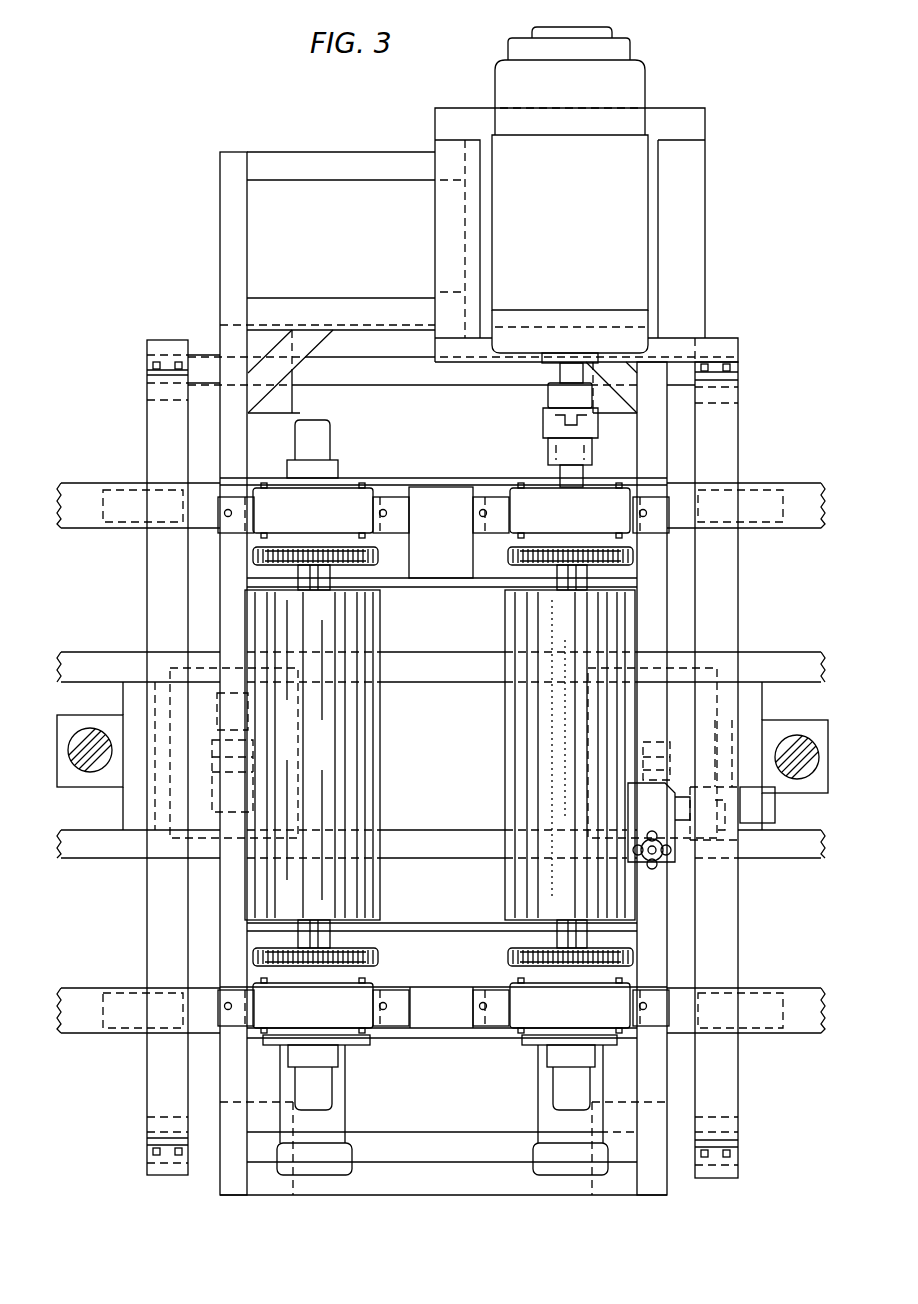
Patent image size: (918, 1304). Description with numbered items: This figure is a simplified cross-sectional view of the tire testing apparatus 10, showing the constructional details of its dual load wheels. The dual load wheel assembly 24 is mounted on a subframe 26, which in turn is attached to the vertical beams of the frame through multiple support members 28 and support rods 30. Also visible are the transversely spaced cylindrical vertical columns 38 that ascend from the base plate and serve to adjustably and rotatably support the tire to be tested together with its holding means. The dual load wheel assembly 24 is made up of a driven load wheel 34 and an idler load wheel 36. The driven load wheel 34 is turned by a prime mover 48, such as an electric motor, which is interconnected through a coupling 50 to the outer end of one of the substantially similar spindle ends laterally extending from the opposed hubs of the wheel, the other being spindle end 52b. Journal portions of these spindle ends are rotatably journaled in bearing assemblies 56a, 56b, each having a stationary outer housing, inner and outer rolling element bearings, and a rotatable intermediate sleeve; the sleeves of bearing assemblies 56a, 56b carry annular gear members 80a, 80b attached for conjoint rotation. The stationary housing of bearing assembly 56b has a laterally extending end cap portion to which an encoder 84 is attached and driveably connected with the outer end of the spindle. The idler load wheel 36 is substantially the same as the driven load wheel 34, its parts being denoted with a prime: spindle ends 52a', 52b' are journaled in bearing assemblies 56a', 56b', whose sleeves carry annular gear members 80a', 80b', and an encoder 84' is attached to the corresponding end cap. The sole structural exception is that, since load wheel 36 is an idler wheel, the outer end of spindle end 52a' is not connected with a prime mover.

The apparatus 10 is at (143, 227).
The dual load wheel assembly 24 is at (207, 601).
The subframe 26 is at (722, 910).
The support members 28 is at (800, 515).
The support rods 30 is at (375, 370).
The driven load wheel 34 is at (560, 770).
The idler load wheel 36 is at (323, 715).
The cylindrical vertical columns 38 is at (88, 775).
The prime mover 48 is at (613, 241).
The coupling 50 is at (543, 422).
The spindle end 52a' is at (440, 604).
The spindle end 52b' is at (315, 921).
The spindle end 52b is at (573, 912).
The bearing assembly 56a is at (531, 522).
The bearing assembly 56a' is at (313, 479).
The bearing assembly 56b is at (547, 1023).
The bearing assembly 56b' is at (331, 1030).
The annular gear member 80a is at (621, 559).
The annular gear member 80a' is at (340, 582).
The annular gear member 80b is at (570, 983).
The annular gear member 80b' is at (315, 983).
The encoder 84 is at (562, 1105).
The encoder 84' is at (324, 1105).